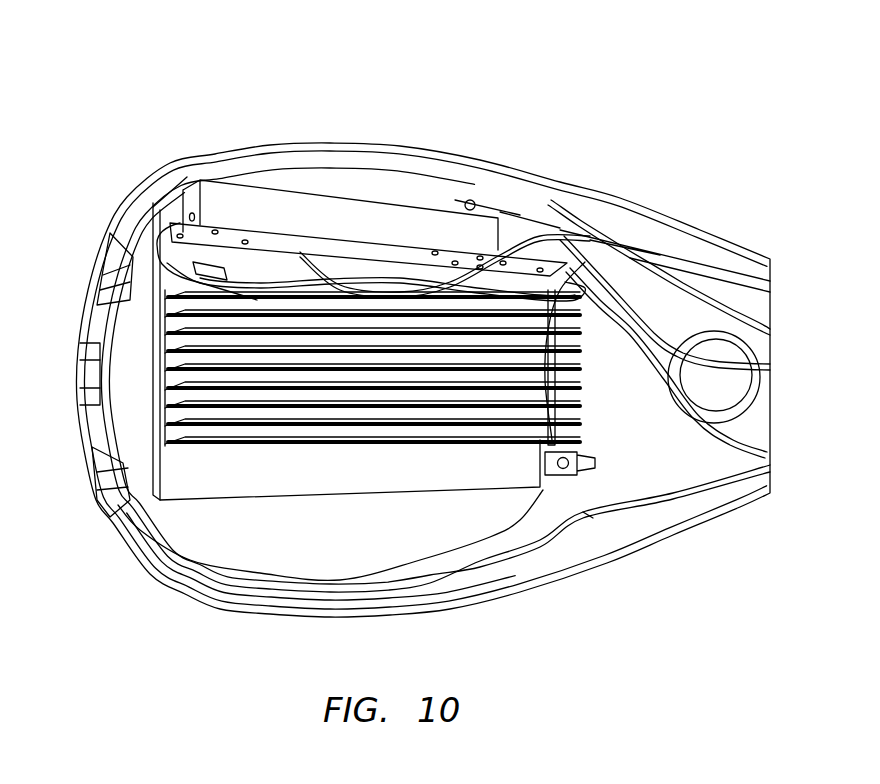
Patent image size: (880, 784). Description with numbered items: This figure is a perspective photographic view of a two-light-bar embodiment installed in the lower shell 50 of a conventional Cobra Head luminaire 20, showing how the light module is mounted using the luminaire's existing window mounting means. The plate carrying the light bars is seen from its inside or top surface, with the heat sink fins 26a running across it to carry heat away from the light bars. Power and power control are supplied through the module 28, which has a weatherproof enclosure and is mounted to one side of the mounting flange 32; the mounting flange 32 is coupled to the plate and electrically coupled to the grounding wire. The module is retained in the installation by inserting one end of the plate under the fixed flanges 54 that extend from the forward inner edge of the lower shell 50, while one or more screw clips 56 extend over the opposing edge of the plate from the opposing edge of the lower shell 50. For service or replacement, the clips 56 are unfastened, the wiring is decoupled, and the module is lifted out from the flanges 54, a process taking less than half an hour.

The luminaire 20 is at (368, 98).
The heat sink 26a is at (227, 447).
The module 28 is at (407, 218).
The mounting flange 32 is at (560, 240).
The lower shell 50 is at (567, 562).
The fixed flanges 54 is at (113, 277).
The screw clips 56 is at (584, 471).